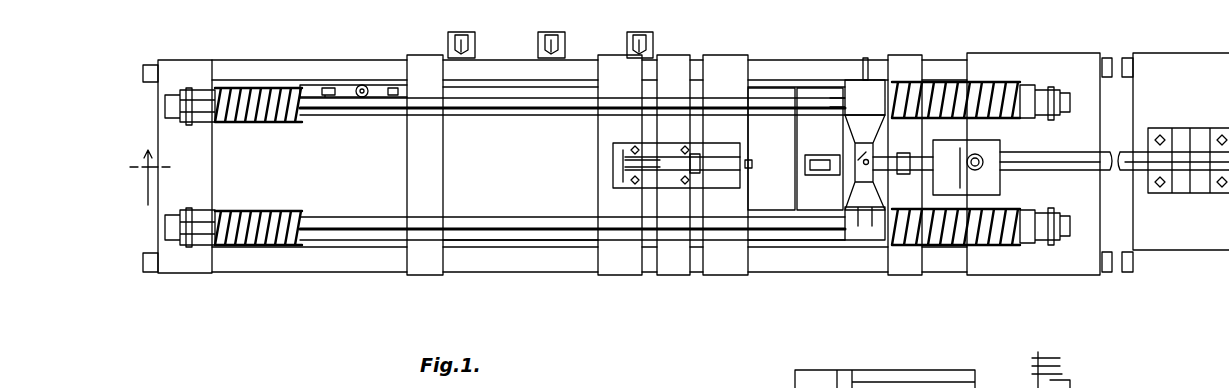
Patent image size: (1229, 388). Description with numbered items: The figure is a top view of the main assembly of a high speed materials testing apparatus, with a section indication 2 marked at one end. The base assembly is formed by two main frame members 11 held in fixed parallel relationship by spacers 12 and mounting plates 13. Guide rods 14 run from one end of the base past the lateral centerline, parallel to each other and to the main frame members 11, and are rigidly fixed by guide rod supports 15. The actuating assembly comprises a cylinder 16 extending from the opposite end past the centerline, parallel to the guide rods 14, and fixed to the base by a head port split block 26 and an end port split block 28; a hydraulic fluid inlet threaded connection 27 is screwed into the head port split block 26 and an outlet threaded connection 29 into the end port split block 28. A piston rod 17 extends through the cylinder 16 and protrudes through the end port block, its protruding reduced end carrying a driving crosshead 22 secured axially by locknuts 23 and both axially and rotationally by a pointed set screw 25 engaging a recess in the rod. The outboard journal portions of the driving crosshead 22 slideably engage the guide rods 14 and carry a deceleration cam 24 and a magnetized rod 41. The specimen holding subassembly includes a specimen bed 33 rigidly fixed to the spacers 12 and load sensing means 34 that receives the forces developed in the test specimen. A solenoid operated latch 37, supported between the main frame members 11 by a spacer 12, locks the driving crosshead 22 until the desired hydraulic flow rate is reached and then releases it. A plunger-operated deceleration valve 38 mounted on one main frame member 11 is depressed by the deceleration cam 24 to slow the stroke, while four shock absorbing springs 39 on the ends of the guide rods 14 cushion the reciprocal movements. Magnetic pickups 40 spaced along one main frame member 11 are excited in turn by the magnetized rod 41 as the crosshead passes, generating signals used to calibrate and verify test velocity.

The section line 2 is at (150, 183).
The main frame members 11 is at (330, 70).
The spacers 12 is at (676, 60).
The mounting plates 13 is at (1056, 62).
The guide rods 14 is at (530, 100).
The guide rod supports 15 is at (188, 86).
The cylinder 16 is at (1048, 160).
The piston rod 17 is at (913, 158).
The driving crosshead 22 is at (866, 235).
The locknuts 23 is at (846, 160).
The deceleration cam 24 is at (843, 92).
The pointed set screw 25 is at (860, 166).
The head port split block 26 is at (1198, 185).
The hydraulic fluid inlet threaded connection 27 is at (785, 387).
The end port split block 28 is at (968, 178).
The outlet threaded connection 29 is at (968, 158).
The specimen bed 33 is at (740, 181).
The load sensing means 34 is at (715, 158).
The solenoid operated latch 37 is at (1036, 355).
The plunger-operated deceleration valve 38 is at (346, 98).
The shock absorbing springs 39 is at (288, 120).
The magnetic pickups 40 is at (462, 36).
The magnetized rod 41 is at (866, 58).